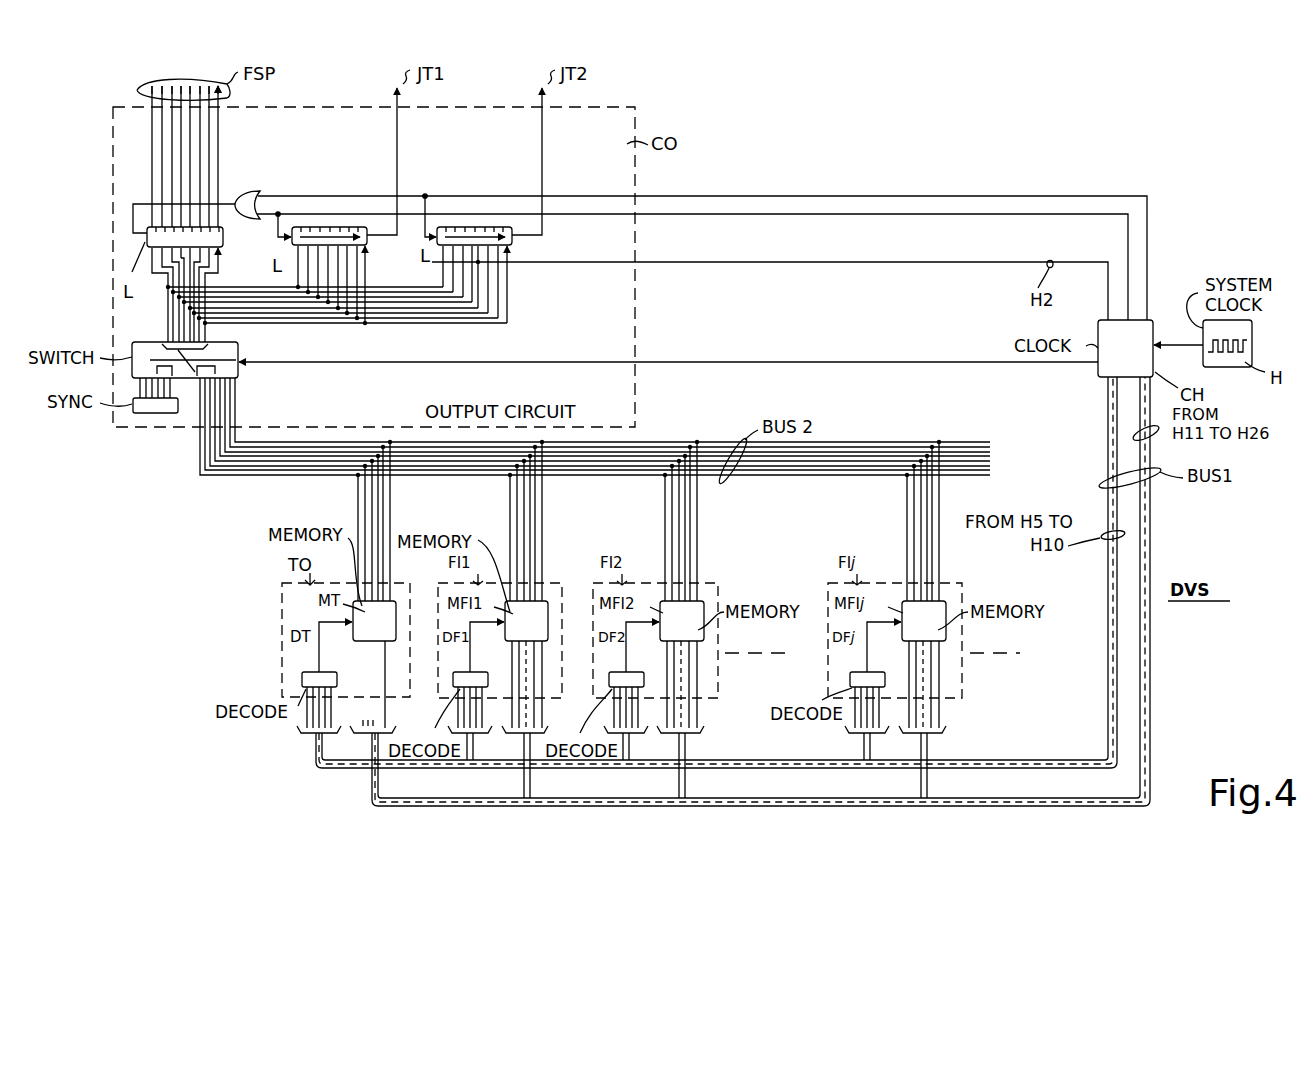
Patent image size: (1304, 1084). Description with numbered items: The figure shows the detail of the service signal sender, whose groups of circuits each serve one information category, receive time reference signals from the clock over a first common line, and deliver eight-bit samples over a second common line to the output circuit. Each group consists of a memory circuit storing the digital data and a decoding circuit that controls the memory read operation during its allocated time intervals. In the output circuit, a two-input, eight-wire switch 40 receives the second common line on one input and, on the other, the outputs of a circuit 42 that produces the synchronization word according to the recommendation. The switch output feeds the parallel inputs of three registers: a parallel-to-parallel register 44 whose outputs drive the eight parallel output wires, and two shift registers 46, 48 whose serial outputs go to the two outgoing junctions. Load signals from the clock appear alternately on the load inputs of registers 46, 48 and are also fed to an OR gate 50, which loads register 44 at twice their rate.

The switch 40 is at (238, 371).
The synchronization word circuit 42 is at (157, 413).
The parallel-to-parallel register 44 is at (223, 241).
The shift register 46 is at (367, 240).
The shift register 48 is at (512, 242).
The OR gate 50 is at (248, 191).